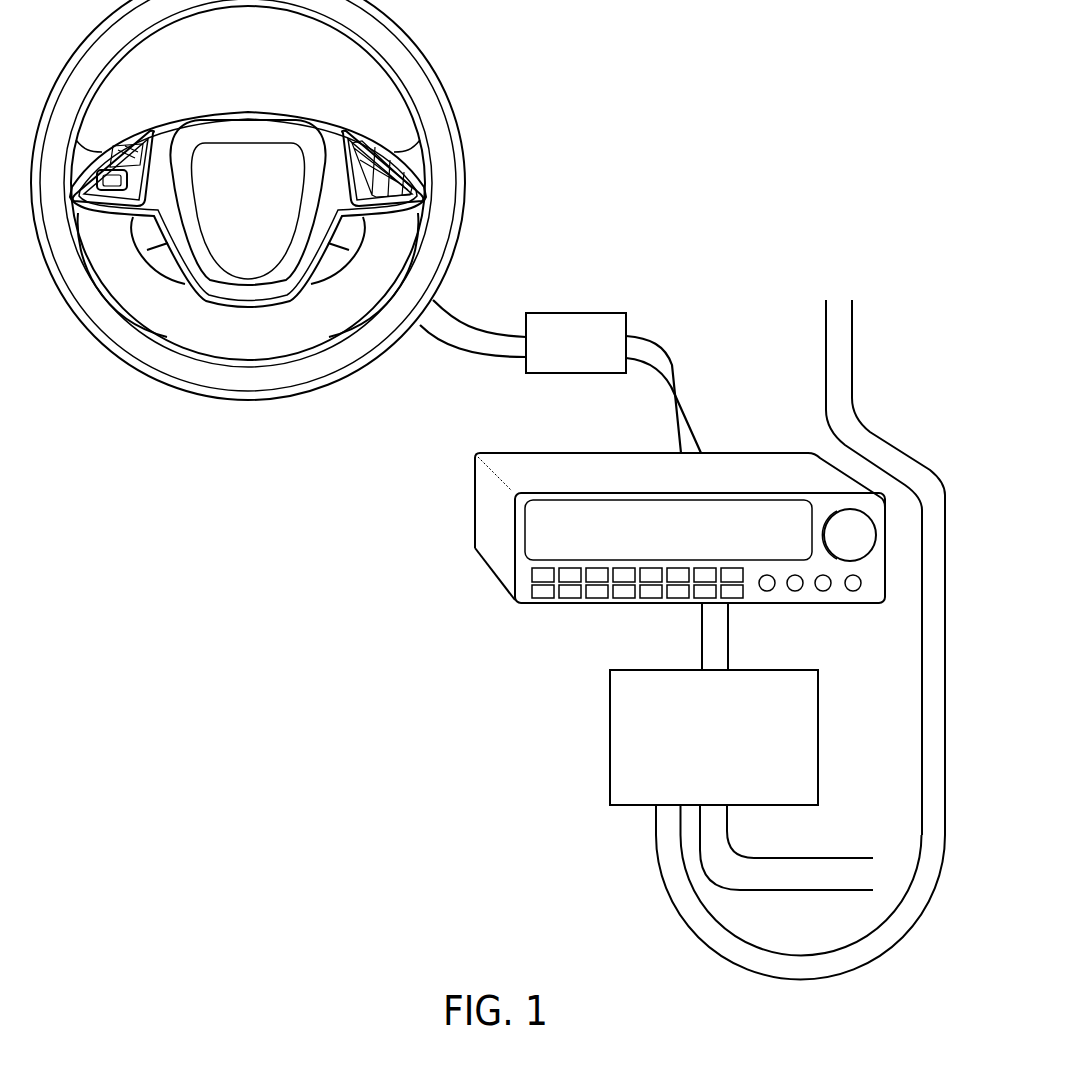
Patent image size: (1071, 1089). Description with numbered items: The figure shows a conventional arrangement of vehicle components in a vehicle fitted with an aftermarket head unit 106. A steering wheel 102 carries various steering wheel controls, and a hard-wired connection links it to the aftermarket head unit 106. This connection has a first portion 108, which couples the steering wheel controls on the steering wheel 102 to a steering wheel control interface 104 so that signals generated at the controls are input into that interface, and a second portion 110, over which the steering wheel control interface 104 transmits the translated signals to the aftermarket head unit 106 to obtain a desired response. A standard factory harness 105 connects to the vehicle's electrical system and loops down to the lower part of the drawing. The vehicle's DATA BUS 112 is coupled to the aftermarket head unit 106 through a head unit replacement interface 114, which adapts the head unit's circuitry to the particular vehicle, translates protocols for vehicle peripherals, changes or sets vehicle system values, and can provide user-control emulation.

The steering wheel 102 is at (440, 97).
The steering wheel control interface 104 is at (593, 313).
The standard factory harness 105 is at (853, 360).
The aftermarket head unit 106 is at (698, 488).
The first portion 108 is at (497, 330).
The second portion 110 is at (672, 358).
The DATA BUS 112 is at (823, 856).
The head unit replacement interface 114 is at (753, 668).